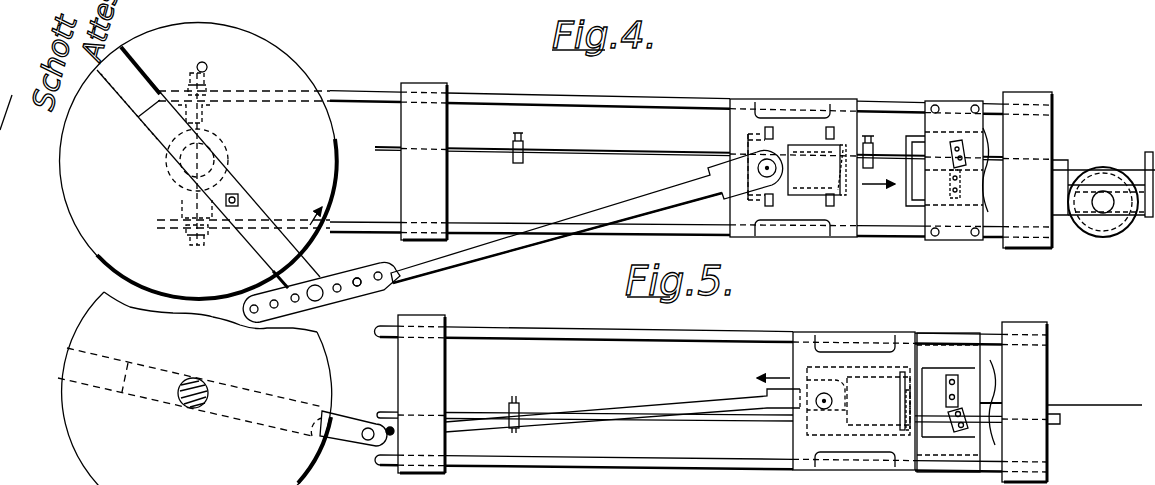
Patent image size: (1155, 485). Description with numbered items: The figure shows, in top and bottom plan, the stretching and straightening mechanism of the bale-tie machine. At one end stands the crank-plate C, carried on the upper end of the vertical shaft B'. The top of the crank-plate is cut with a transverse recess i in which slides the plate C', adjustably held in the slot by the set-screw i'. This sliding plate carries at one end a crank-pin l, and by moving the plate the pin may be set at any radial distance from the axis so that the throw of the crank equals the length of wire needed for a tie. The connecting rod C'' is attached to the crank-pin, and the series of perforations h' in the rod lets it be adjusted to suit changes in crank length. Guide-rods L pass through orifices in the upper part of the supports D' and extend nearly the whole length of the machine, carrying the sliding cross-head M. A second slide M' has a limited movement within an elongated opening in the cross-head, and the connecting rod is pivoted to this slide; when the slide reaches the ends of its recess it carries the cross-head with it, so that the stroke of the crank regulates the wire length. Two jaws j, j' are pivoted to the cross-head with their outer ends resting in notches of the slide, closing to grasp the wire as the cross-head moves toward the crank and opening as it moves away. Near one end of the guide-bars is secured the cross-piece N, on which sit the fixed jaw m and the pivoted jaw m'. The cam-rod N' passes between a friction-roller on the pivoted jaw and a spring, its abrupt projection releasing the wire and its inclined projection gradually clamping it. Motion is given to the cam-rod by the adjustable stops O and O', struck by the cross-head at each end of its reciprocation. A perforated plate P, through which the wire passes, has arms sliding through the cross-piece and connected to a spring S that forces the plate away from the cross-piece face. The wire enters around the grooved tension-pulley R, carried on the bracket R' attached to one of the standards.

In FIG. 4, the crank-plate C is at (198, 161).
In FIG. 5, the crank-plate C is at (197, 388).
In FIG. 4, the vertical shaft B' is at (170, 153).
In FIG. 5, the vertical shaft B' is at (190, 398).
In FIG. 4, the sliding plate C' is at (208, 167).
In FIG. 4, the connecting-rod C'' is at (587, 216).
In FIG. 5, the connecting-rod C'' is at (582, 409).
In FIG. 4, the transverse recess i is at (139, 70).
In FIG. 4, the set-screw i' is at (236, 206).
In FIG. 4, the guide-rods L is at (378, 224).
In FIG. 5, the guide-rods L is at (615, 324).
In FIG. 4, the supports D' is at (726, 158).
In FIG. 5, the supports D' is at (722, 398).
In FIG. 4, the cam-rod N' is at (721, 171).
In FIG. 5, the cam-rod N' is at (759, 412).
In FIG. 4, the adjustable stop O' is at (531, 142).
In FIG. 5, the adjustable stop O' is at (521, 403).
In FIG. 4, the sliding cross-head M is at (793, 156).
In FIG. 5, the sliding cross-head M is at (836, 388).
In FIG. 4, the slide M' is at (817, 172).
In FIG. 4, the crank-pin l is at (318, 290).
In FIG. 4, the perforations h' is at (353, 265).
In FIG. 4, the adjustable stop O is at (877, 146).
In FIG. 4, the plate P is at (912, 140).
In FIG. 4, the cross-piece N is at (954, 159).
In FIG. 5, the cross-piece N is at (948, 402).
In FIG. 4, the fixed jaw m is at (954, 141).
In FIG. 5, the fixed jaw m is at (961, 388).
In FIG. 4, the pivoted jaw m' is at (945, 184).
In FIG. 5, the pivoted jaw m' is at (959, 433).
In FIG. 4, the spring S is at (992, 170).
In FIG. 5, the spring S is at (992, 393).
In FIG. 4, the tension-pulley R is at (1103, 220).
In FIG. 4, the bracket R' is at (1137, 174).
In FIG. 5, the jaws j is at (891, 401).
In FIG. 5, the pin j' is at (893, 410).